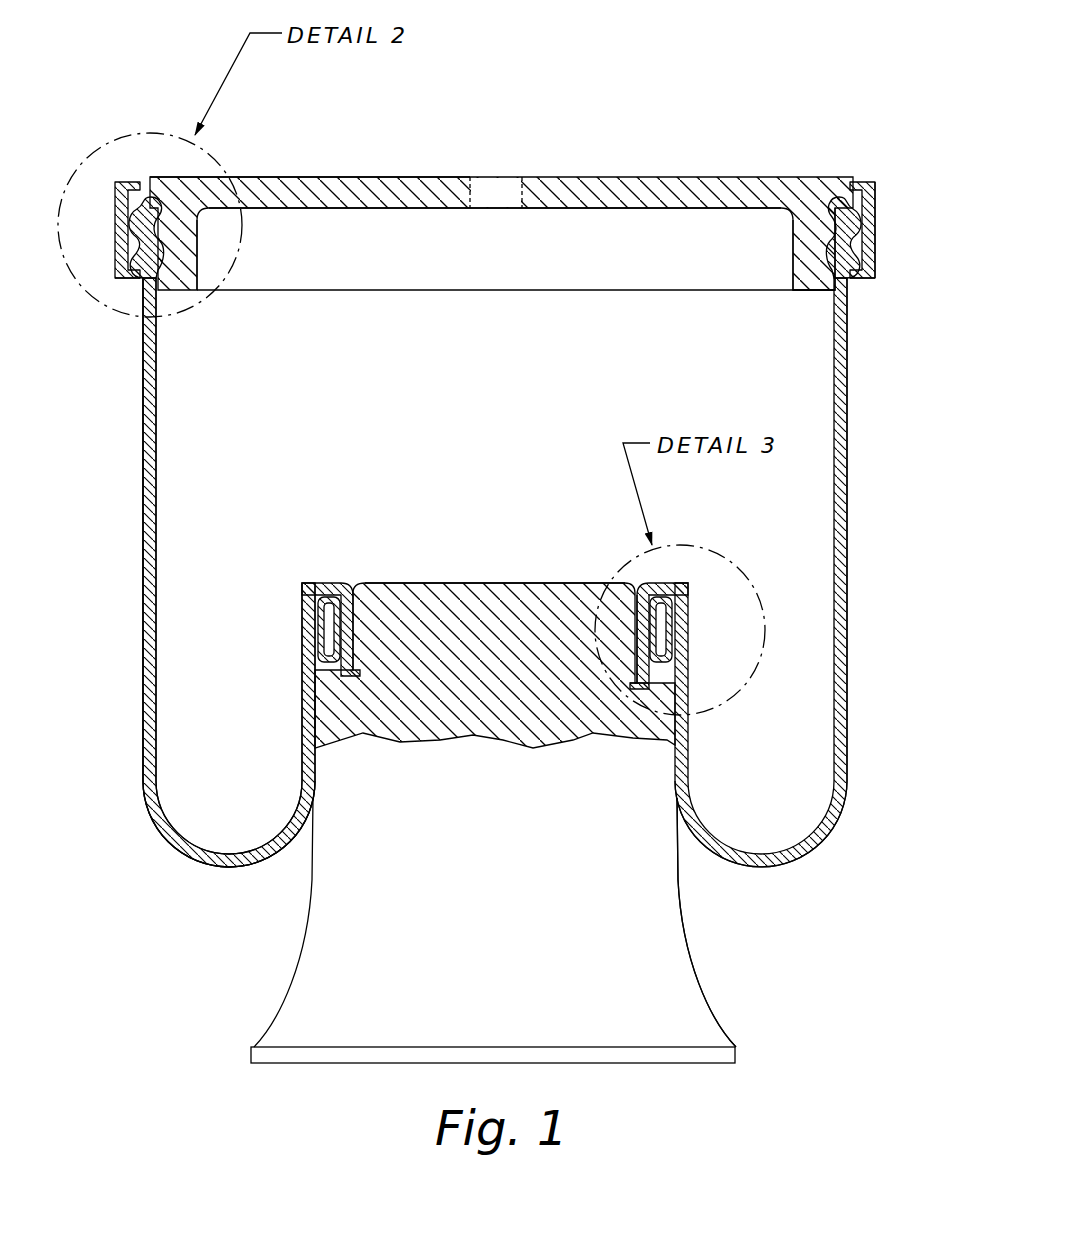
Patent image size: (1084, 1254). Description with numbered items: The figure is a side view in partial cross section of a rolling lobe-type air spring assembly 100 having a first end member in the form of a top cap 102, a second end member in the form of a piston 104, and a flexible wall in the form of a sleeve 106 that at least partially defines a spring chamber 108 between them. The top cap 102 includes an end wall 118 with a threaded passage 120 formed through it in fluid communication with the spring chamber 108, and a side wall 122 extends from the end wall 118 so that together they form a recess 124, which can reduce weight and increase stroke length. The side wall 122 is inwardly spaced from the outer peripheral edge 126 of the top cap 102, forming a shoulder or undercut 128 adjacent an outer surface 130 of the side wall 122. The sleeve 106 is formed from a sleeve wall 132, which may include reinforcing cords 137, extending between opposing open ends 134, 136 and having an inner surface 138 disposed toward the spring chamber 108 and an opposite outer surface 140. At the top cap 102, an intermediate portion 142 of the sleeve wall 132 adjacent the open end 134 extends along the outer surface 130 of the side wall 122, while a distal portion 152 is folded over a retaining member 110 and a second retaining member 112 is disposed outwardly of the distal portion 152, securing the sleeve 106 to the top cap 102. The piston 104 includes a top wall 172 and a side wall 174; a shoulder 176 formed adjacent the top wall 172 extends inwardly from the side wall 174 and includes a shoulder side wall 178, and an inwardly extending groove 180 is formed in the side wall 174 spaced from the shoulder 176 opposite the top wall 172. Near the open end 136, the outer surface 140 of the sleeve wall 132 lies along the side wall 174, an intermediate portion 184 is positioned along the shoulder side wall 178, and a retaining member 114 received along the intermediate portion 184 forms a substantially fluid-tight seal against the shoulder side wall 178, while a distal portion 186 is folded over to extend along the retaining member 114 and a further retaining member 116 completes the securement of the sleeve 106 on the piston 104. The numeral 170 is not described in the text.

The air spring assembly 100 is at (772, 92).
The top cap 102 is at (608, 172).
The piston 104 is at (290, 982).
The sleeve 106 is at (850, 530).
The spring chamber 108 is at (511, 471).
The retaining member 110 is at (860, 228).
The retaining member 112 is at (880, 268).
The retaining member 114 is at (664, 637).
The retaining member 116 is at (684, 606).
The end wall 118 is at (365, 196).
The threaded passage 120 is at (496, 172).
The side wall 122 is at (812, 237).
The recess 124 is at (640, 262).
The outer peripheral edge 126 is at (120, 200).
The shoulder or undercut 128 is at (151, 232).
The outer surface 130 is at (835, 265).
The sleeve wall 132 is at (145, 605).
The open end 134 is at (856, 287).
The open end 136 is at (300, 572).
The reinforcing cords 137 is at (842, 724).
The inner surface 138 is at (156, 525).
The outer surface 140 is at (143, 455).
The intermediate portion 142 is at (198, 240).
The distal portion 152 is at (118, 255).
The end cap top surface 170 is at (278, 177).
The top wall 172 is at (470, 582).
The side wall 174 is at (685, 940).
The shoulder 176 is at (660, 688).
The shoulder side wall 178 is at (640, 628).
The groove 180 is at (665, 687).
The intermediate portion 184 is at (362, 662).
The distal portion 186 is at (320, 668).